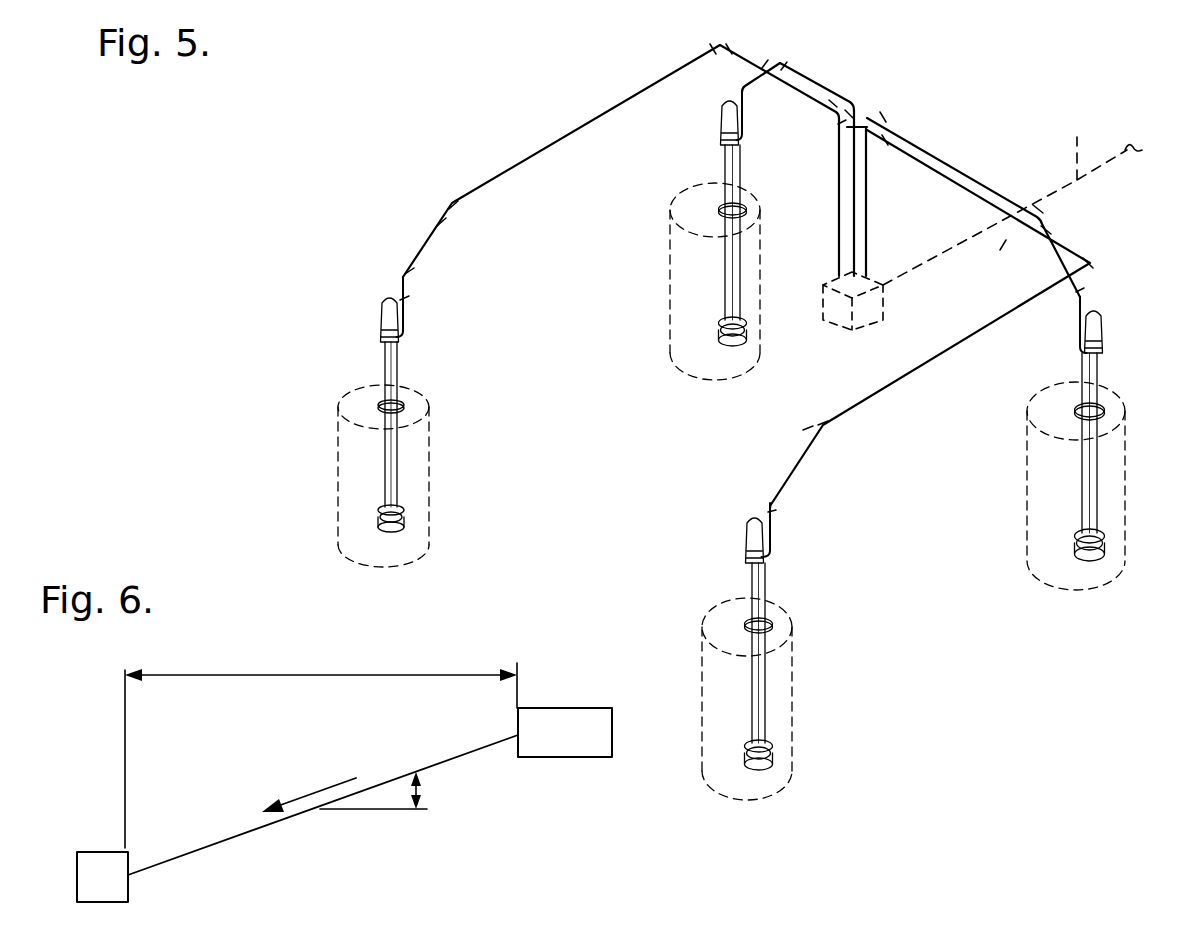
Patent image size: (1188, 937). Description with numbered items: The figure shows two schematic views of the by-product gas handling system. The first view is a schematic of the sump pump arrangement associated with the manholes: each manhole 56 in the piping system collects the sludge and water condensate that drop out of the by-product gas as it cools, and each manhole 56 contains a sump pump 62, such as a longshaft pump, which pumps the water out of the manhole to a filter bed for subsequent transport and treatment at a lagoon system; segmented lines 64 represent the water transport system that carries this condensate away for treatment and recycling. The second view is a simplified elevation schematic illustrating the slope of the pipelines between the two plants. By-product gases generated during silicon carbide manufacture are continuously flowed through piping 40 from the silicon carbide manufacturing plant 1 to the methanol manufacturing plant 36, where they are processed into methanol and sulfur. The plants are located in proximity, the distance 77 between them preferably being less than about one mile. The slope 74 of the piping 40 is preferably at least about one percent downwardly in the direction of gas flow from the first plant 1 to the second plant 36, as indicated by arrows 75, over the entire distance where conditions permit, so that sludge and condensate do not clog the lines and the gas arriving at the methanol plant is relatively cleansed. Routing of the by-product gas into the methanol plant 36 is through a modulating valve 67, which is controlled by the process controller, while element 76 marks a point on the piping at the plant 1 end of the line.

In FIG. 6, the silicon carbide manufacturing plant 1 is at (588, 694).
In FIG. 6, the methanol manufacturing plant 36 is at (90, 852).
In FIG. 6, the piping 40 is at (445, 759).
In FIG. 5, the manhole 56 is at (326, 461).
In FIG. 5, the sump pump 62 is at (385, 351).
In FIG. 5, the segmented lines 64 is at (1077, 144).
In FIG. 6, the modulating valve 67 is at (130, 873).
In FIG. 6, the slope 74 is at (420, 790).
In FIG. 6, the arrows 75 is at (315, 793).
In FIG. 6, the emission point 76 is at (517, 738).
In FIG. 6, the distance 77 is at (327, 673).